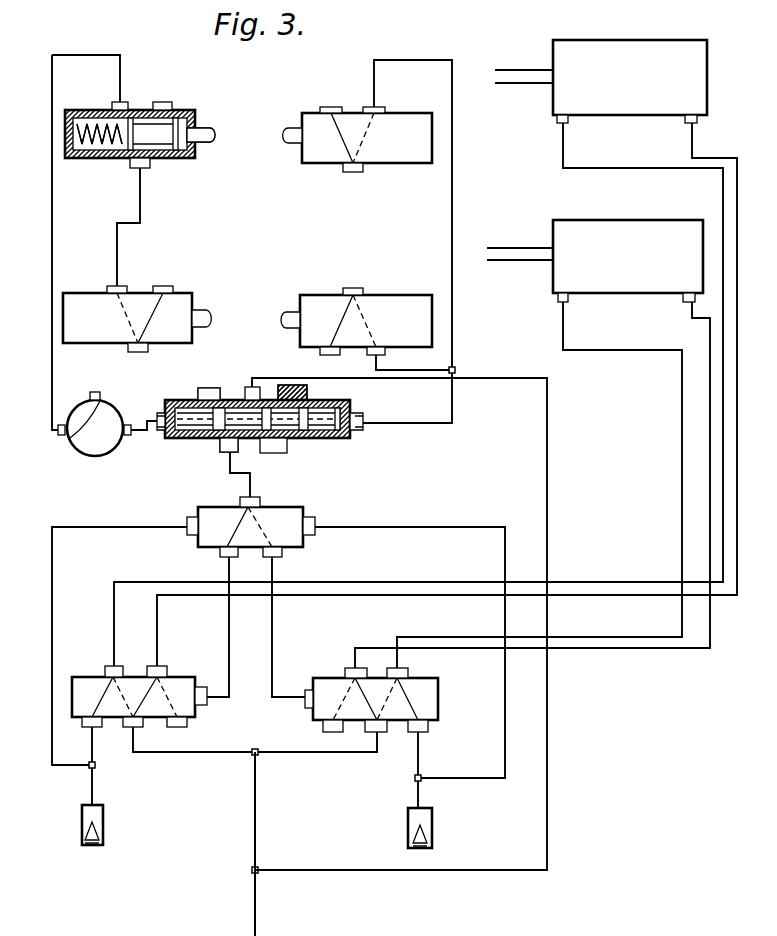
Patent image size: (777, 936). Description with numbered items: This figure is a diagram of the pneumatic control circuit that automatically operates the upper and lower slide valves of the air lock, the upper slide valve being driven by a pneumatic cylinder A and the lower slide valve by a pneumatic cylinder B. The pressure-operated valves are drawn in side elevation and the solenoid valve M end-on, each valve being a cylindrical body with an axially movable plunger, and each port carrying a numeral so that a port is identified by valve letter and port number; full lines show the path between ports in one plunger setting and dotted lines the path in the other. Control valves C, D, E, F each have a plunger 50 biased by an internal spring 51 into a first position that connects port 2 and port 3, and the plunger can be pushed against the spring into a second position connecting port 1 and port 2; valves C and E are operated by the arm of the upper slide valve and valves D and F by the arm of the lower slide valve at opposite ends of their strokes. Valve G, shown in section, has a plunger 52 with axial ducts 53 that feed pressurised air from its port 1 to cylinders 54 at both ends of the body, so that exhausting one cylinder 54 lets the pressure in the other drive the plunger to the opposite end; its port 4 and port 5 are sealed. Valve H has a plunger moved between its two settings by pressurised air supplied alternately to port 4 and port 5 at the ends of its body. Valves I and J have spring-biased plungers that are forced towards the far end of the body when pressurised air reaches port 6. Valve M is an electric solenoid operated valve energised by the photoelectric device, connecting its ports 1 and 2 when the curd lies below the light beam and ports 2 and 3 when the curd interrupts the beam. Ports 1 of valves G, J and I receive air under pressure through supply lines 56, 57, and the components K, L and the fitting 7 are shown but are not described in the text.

The port 1 is at (114, 102).
The port 2 is at (150, 168).
The port 3 is at (162, 102).
The port 4 is at (285, 453).
The port 5 is at (295, 385).
The port 6 is at (158, 428).
The spool valve end plug 7 is at (358, 418).
The plunger 50 is at (190, 152).
The internal spring 51 is at (86, 160).
The plunger 52 is at (248, 454).
The axial ducts 53 is at (200, 402).
The cylinders 54 is at (174, 439).
The line 56 is at (256, 797).
The line 57 is at (412, 872).
The pneumatic cylinder A is at (630, 77).
The pneumatic cylinder B is at (628, 256).
The control valve C is at (194, 114).
The control valve D is at (140, 293).
The control valve E is at (350, 113).
The control valve F is at (394, 295).
The valve G is at (345, 436).
The valve H is at (296, 507).
The valve I is at (78, 678).
The valve J is at (440, 702).
The pump K is at (105, 825).
The pump L is at (435, 828).
The electric solenoid operated valve M is at (82, 406).